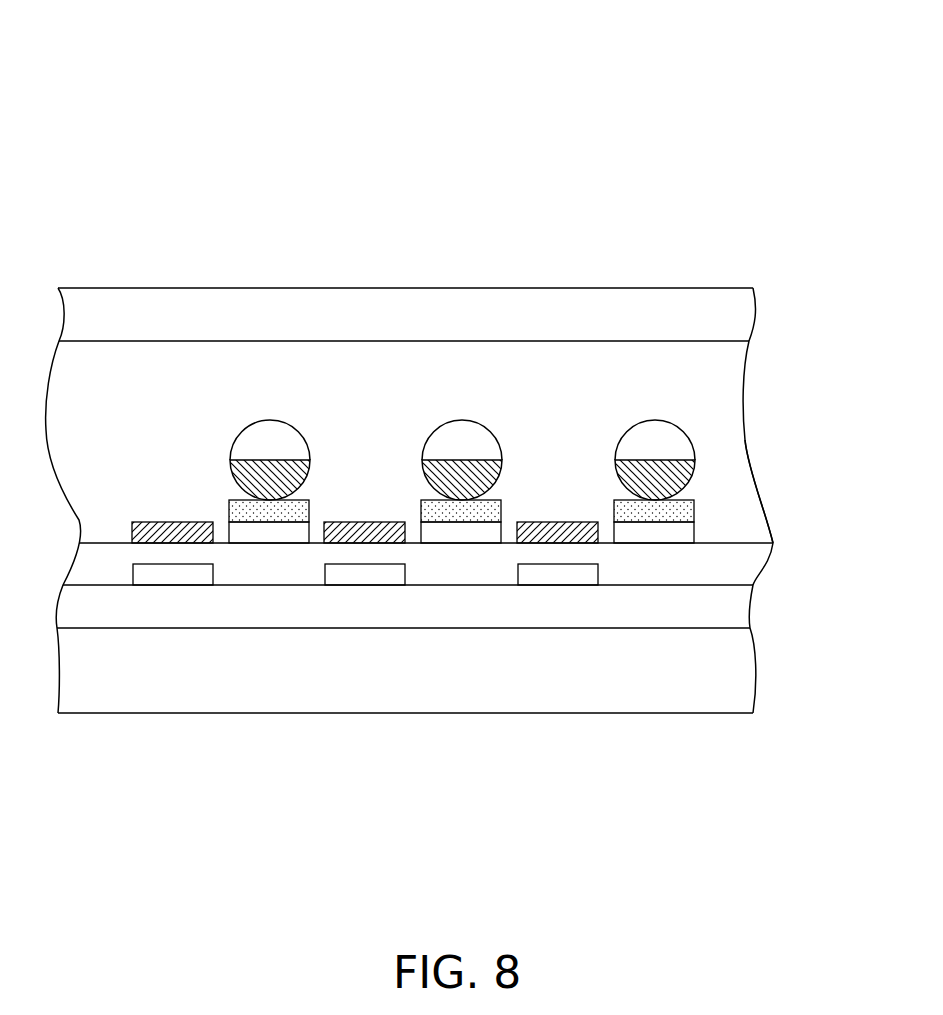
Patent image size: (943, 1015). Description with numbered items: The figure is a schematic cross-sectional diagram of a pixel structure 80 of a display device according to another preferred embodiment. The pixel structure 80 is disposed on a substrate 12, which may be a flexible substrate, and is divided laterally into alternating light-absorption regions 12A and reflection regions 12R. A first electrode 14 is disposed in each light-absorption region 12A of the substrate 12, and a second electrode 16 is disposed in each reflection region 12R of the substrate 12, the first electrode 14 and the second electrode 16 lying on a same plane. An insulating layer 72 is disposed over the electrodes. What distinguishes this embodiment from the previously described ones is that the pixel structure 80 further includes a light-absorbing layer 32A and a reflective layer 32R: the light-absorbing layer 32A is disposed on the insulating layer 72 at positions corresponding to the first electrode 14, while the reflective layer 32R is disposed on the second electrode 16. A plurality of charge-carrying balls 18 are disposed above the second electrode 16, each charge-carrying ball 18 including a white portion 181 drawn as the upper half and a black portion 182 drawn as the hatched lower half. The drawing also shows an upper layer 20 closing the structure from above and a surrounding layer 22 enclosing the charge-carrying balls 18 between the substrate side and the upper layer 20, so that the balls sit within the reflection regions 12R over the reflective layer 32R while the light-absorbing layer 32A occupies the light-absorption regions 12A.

The pixel structure 80 is at (728, 103).
The substrate 12 is at (714, 704).
The light-absorption region 12A is at (133, 250).
The reflection region 12R is at (228, 250).
The first electrode 14 is at (175, 578).
The second electrode 16 is at (277, 533).
The charge-carrying ball 18 is at (484, 423).
The white portion 181 is at (298, 432).
The black portion 182 is at (308, 474).
The cover substrate 20 is at (714, 326).
The adhesive layer 22 is at (743, 467).
The light-absorbing layer 32A is at (173, 518).
The reflective layer 32R is at (227, 494).
The insulating layer 72 is at (758, 565).